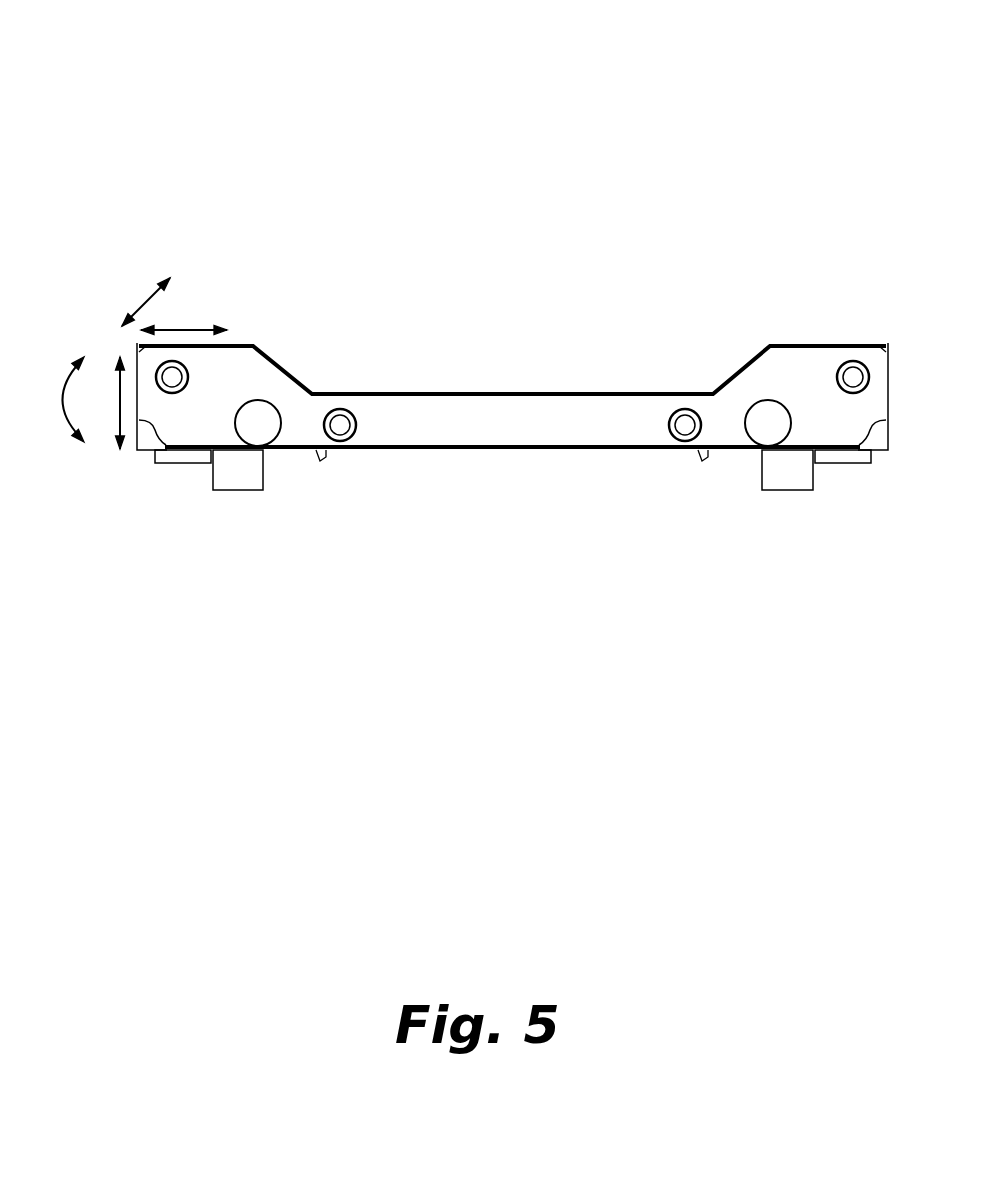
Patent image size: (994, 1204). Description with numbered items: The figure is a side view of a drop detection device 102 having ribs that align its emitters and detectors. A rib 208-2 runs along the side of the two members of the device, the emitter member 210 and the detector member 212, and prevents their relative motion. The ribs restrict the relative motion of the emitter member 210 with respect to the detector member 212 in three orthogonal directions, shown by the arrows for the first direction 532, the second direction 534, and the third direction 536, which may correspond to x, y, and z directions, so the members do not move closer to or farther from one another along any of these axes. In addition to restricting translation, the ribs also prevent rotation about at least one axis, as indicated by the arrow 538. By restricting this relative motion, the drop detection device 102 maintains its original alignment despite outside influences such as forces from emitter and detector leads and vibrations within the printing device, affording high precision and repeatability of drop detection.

The drop detection device 102 is at (216, 70).
The rib 208-2 is at (455, 420).
The emitter member 210 is at (880, 440).
The detector member 212 is at (153, 440).
The first direction 532 is at (202, 325).
The second direction 534 is at (148, 297).
The third direction 536 is at (120, 403).
The rotation arrow 538 is at (60, 367).